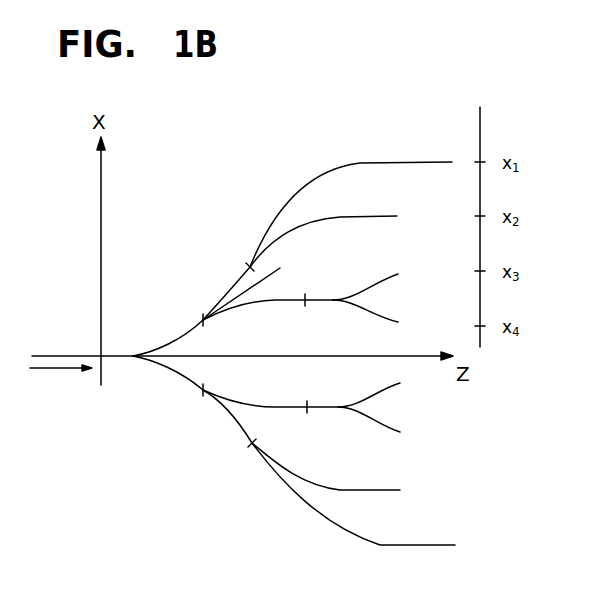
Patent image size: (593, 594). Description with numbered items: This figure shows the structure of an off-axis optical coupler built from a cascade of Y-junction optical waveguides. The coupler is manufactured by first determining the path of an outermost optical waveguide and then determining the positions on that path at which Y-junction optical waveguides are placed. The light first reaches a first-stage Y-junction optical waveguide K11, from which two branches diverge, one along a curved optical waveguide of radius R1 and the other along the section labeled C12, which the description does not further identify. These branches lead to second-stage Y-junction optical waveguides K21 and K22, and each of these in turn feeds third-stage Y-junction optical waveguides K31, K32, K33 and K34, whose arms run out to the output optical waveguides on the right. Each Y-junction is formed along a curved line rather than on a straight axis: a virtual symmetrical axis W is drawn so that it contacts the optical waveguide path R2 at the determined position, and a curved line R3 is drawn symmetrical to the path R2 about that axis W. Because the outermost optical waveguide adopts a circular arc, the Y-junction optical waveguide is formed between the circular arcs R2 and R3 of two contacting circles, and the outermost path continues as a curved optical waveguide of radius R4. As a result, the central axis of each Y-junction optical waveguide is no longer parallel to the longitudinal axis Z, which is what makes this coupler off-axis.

The Y-junction optical waveguide K11 is at (126, 372).
The waveguide core segment C12 is at (168, 379).
The radius of a curved optical waveguide R1 is at (168, 333).
The radius of a curved optical waveguide R2 is at (226, 289).
The radius of a curved optical waveguide R3 is at (268, 316).
The radius of a curved optical waveguide R4 is at (351, 208).
The Y-junction optical waveguide K21 is at (194, 306).
The Y-junction optical waveguide K22 is at (199, 406).
The Y-junction optical waveguide K31 is at (307, 243).
The Y-junction optical waveguide K32 is at (346, 295).
The Y-junction optical waveguide K33 is at (301, 404).
The Y-junction optical waveguide K34 is at (329, 467).
The virtual symmetrical axis W is at (253, 284).